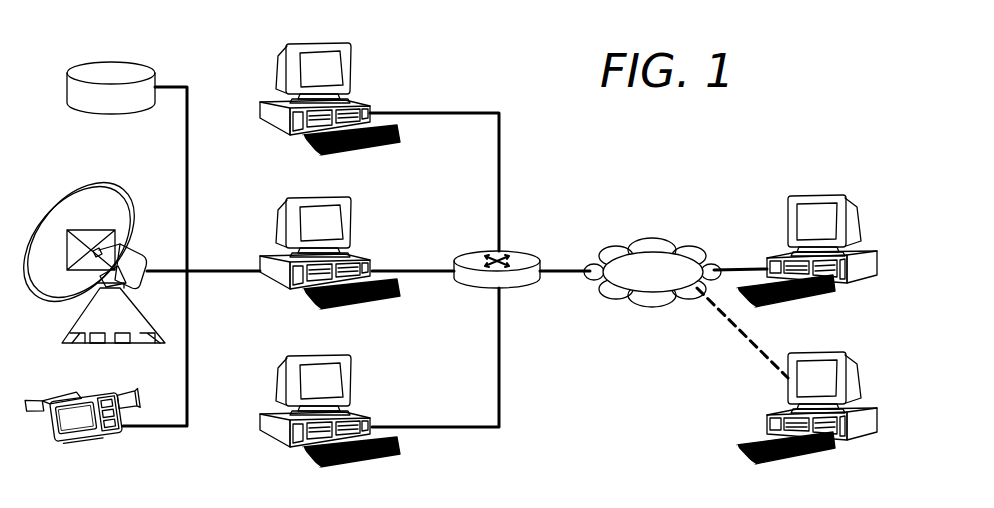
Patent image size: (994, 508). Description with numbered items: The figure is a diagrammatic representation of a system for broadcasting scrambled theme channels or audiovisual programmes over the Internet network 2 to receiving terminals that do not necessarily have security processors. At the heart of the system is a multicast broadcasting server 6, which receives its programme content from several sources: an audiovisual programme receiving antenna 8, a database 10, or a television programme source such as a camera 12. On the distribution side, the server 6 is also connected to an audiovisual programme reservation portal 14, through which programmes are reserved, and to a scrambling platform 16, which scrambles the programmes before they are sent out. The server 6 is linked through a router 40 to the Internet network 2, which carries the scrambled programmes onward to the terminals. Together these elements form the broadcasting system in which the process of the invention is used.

The Internet network 2 is at (651, 258).
The multicast broadcasting server 6 is at (280, 224).
The audiovisual programme receiving antenna 8 is at (84, 198).
The database 10 is at (110, 68).
The camera 12 is at (102, 437).
The audiovisual programme reservation portal 14 is at (280, 72).
The scrambling platform 16 is at (280, 386).
The router 40 is at (468, 259).